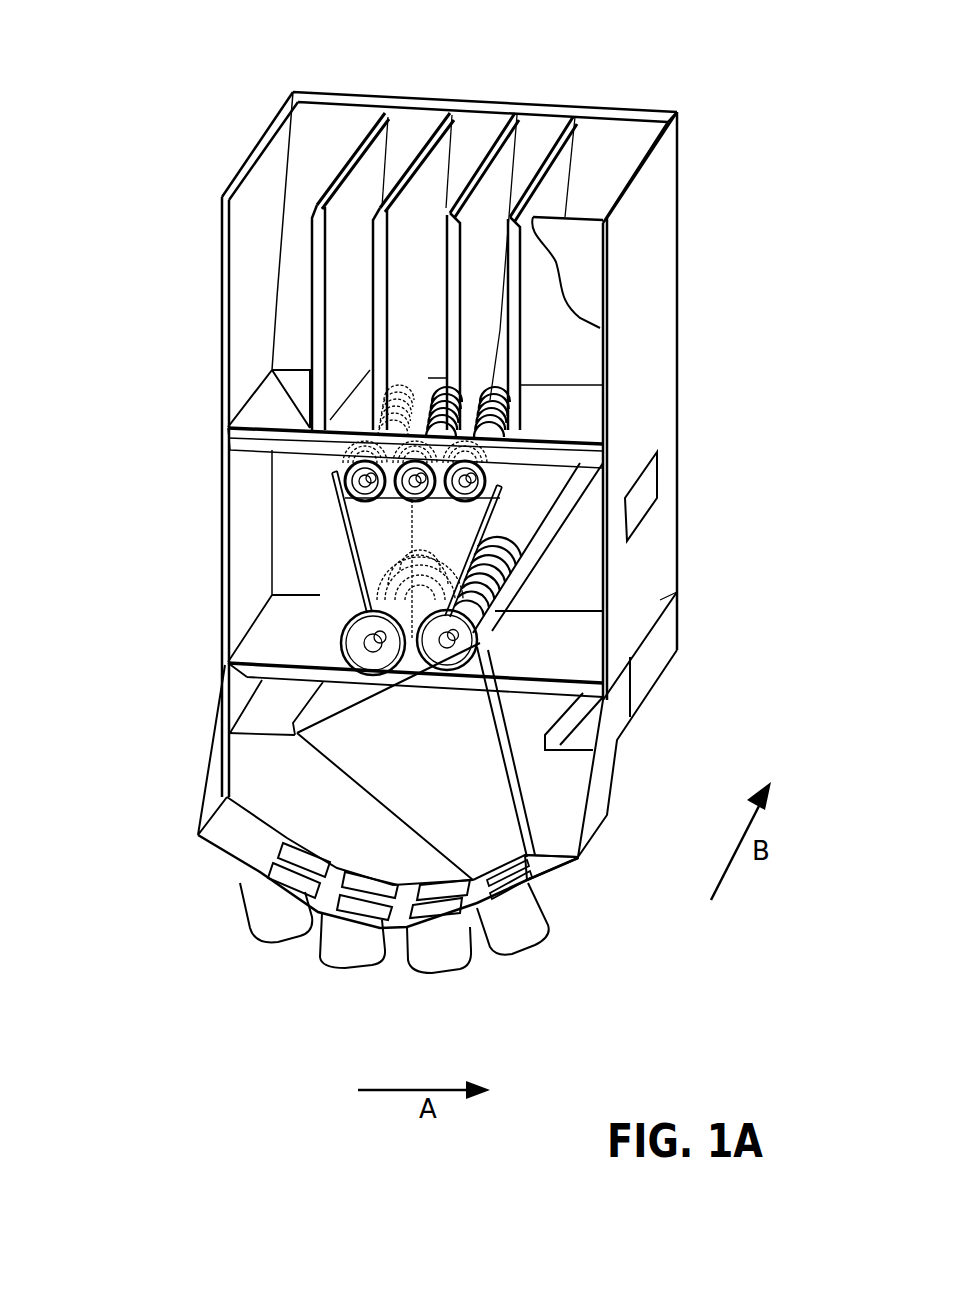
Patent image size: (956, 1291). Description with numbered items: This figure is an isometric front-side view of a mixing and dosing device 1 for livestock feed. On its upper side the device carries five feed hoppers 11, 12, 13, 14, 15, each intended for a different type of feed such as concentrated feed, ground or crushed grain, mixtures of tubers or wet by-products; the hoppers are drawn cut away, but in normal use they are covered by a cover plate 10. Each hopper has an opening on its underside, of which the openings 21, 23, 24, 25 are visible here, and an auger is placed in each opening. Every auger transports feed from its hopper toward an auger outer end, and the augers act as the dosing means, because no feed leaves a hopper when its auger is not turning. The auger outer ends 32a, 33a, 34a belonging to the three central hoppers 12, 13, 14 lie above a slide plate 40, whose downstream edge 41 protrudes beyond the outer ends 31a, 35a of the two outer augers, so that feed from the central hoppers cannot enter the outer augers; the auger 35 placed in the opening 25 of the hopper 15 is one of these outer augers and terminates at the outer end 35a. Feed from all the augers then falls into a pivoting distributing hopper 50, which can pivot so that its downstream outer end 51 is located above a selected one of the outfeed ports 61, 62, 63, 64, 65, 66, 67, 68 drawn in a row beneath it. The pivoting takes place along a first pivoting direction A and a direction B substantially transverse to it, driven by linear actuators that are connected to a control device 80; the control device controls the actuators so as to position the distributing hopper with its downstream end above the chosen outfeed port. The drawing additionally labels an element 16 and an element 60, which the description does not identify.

The mixing and dosing device 1 is at (144, 73).
The cover plate 10 is at (585, 240).
The feed hopper 11 is at (320, 138).
The feed hopper 12 is at (400, 135).
The feed hopper 13 is at (483, 135).
The feed hopper 14 is at (540, 135).
The feed hopper 15 is at (612, 140).
The left guide plate 16 is at (332, 545).
The opening 21 is at (300, 585).
The opening 23 is at (370, 360).
The opening 24 is at (515, 435).
The opening 25 is at (600, 530).
The auger outer end 31a is at (342, 643).
The auger outer end 32a is at (340, 478).
The auger outer end 33a is at (440, 410).
The auger outer end 34a is at (505, 495).
The auger 35 is at (515, 570).
The auger outer end 35a is at (652, 600).
The slide plate 40 is at (420, 540).
The downstream edge 41 is at (345, 578).
The pivoting distributing hopper 50 is at (550, 830).
The downstream outer end 51 is at (545, 860).
The manifold 60 is at (233, 845).
The outfeed port 61 is at (260, 925).
The outfeed port 62 is at (340, 975).
The outfeed port 63 is at (445, 985).
The outfeed port 64 is at (522, 950).
The outfeed port 65 is at (312, 860).
The outfeed port 66 is at (375, 890).
The outfeed port 67 is at (442, 893).
The outfeed port 68 is at (570, 884).
The control device 80 is at (640, 486).